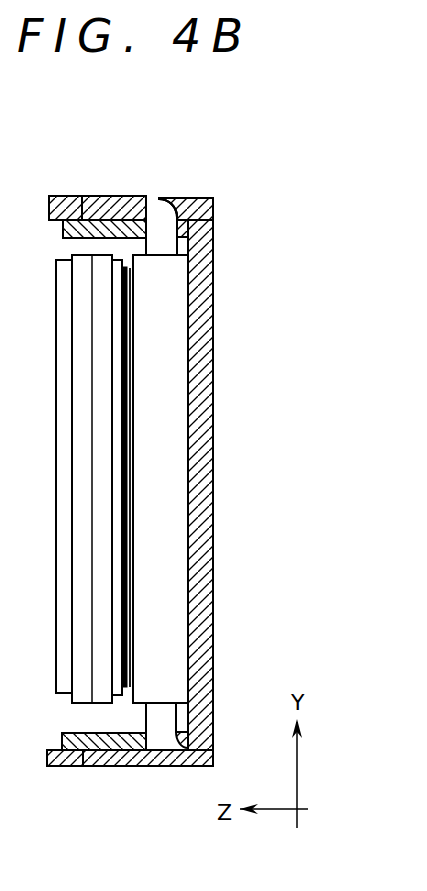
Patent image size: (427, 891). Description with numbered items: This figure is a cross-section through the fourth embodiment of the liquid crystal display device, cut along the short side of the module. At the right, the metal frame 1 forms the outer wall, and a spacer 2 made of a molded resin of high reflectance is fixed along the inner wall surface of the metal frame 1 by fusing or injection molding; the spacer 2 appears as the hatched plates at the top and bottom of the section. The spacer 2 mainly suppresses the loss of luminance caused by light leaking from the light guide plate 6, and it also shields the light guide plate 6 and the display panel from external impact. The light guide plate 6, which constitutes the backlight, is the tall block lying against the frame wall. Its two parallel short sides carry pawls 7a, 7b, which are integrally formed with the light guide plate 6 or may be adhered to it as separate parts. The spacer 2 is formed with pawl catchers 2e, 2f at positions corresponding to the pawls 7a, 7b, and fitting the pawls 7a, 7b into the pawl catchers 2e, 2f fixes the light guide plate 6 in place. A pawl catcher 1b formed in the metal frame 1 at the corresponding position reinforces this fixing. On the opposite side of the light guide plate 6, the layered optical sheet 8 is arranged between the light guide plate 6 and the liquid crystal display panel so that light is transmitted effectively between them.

The metal frame 1 is at (206, 433).
The pawl catcher 1b is at (180, 202).
The spacer 2 is at (78, 196).
The pawl catcher 2e is at (192, 741).
The pawl catcher 2f is at (188, 233).
The light guide plate 6 is at (178, 562).
The pawl 7a is at (163, 730).
The pawl 7b is at (159, 215).
The optical sheet 8 is at (125, 323).